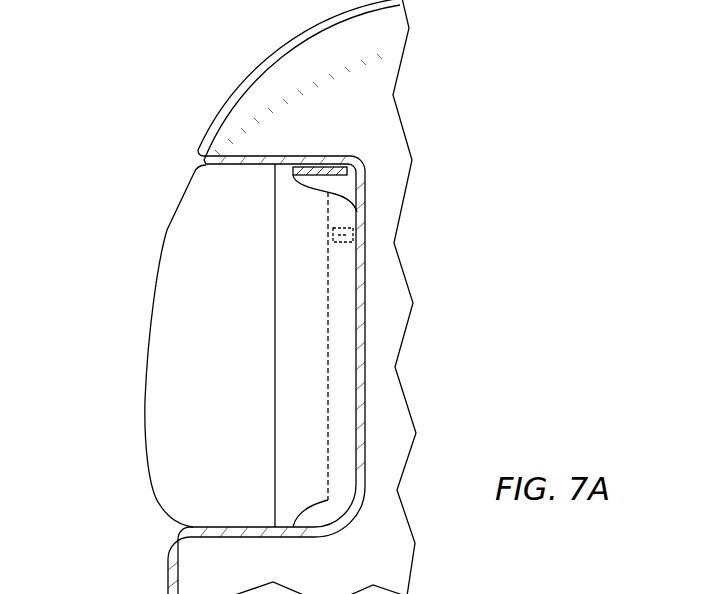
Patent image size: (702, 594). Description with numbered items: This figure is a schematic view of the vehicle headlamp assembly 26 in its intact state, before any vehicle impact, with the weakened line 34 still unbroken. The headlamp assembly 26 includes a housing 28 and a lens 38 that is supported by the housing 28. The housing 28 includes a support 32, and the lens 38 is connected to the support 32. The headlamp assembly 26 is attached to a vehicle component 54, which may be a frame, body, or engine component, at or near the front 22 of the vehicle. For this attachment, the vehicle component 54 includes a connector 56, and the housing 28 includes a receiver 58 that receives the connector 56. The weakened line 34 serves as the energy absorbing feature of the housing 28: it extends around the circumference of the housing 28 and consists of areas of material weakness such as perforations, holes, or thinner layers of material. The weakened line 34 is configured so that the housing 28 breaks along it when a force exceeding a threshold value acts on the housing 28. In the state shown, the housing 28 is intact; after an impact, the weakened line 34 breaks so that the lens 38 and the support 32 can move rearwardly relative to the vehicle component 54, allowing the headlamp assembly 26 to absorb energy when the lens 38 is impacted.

The front 22 is at (288, 78).
The vehicle headlamp assembly 26 is at (86, 104).
The housing 28 is at (364, 172).
The support 32 is at (338, 352).
The weakened line 34 is at (322, 168).
The lens 38 is at (155, 277).
The vehicle component 54 is at (352, 200).
The connector 56 is at (365, 235).
The receiver 58 is at (347, 250).